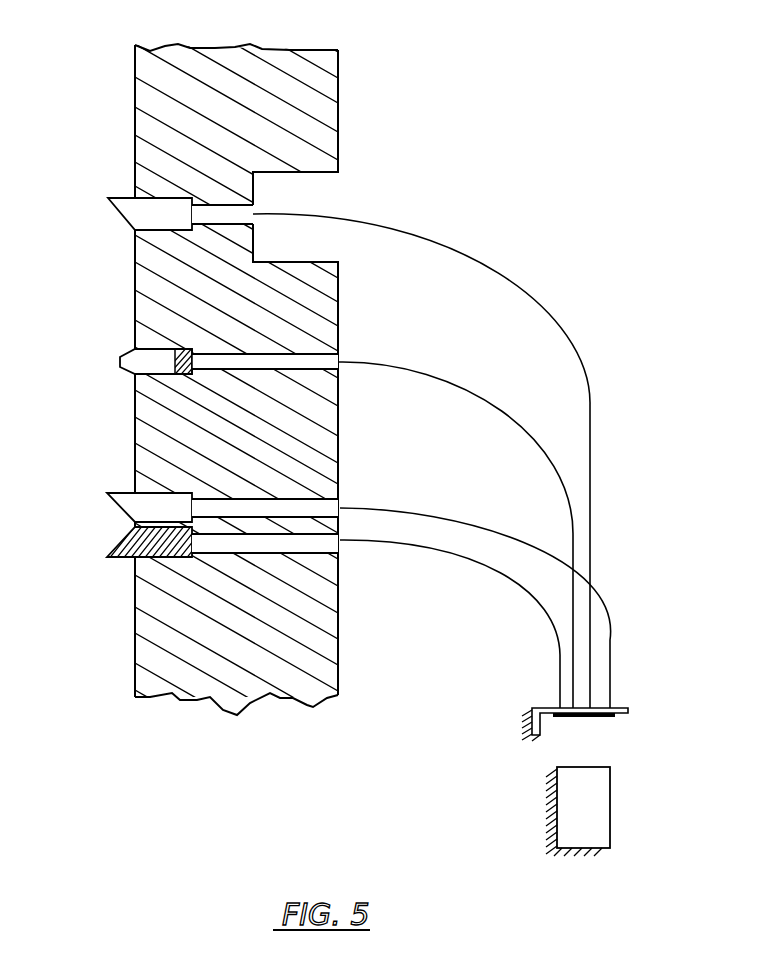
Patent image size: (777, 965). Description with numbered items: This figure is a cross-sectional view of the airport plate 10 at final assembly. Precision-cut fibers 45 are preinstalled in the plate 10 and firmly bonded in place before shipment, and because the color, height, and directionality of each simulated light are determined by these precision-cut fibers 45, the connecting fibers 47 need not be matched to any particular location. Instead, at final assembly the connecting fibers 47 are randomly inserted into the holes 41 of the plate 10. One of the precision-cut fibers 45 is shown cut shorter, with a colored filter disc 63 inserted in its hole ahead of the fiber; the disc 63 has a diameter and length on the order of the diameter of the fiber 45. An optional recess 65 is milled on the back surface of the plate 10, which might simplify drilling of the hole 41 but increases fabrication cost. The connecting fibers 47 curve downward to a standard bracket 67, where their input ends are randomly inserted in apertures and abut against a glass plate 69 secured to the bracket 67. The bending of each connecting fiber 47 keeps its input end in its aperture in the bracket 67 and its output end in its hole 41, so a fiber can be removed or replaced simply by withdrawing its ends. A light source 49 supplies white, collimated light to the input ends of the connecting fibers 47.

The airport plate 10 is at (238, 65).
The holes 41 is at (224, 203).
The precision-cut fibers 45 is at (110, 200).
The connecting fibers 47 is at (590, 472).
The light source 49 is at (582, 813).
The filter disc 63 is at (186, 349).
The recess 65 is at (313, 197).
The bracket 67 is at (628, 709).
The glass plate 69 is at (614, 718).